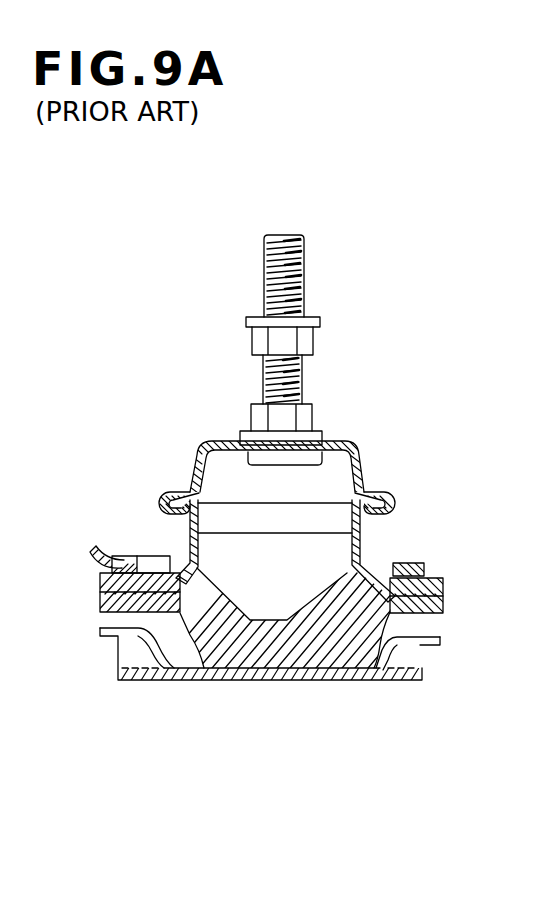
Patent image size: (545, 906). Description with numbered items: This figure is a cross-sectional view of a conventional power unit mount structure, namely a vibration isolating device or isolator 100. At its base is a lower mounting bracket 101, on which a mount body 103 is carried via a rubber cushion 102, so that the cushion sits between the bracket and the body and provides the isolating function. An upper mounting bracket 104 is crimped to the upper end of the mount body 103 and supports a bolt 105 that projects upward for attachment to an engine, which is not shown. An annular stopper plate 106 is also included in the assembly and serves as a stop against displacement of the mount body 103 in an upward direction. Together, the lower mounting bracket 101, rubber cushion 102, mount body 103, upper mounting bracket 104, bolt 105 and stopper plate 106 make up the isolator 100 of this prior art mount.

The vibration isolating device 100 is at (105, 306).
The lower mounting bracket 101 is at (190, 678).
The rubber cushion 102 is at (343, 680).
The mount body 103 is at (367, 533).
The upper mounting bracket 104 is at (353, 447).
The bolt 105 is at (285, 232).
The annular stopper plate 106 is at (112, 558).